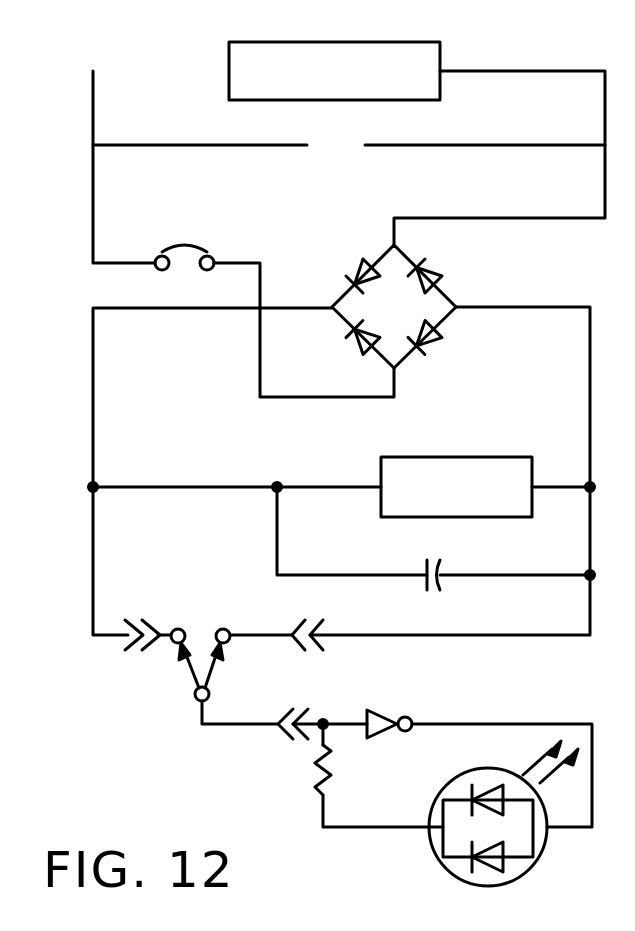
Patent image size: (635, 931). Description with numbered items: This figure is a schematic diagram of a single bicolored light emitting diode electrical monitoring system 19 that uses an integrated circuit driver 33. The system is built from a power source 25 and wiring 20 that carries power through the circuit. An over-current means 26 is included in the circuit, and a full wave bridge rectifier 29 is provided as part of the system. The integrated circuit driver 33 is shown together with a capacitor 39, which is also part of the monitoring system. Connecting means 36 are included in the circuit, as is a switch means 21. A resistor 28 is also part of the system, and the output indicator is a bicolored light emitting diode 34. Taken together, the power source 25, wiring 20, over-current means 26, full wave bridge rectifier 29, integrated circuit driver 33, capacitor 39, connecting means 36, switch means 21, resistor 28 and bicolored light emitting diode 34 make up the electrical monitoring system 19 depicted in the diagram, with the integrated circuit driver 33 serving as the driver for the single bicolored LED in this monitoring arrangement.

The electrical monitoring system 19 is at (495, 70).
The wiring 20 is at (349, 145).
The switch means 21 is at (208, 672).
The power source 25 is at (260, 53).
The over-current means 26 is at (182, 243).
The resistor 28 is at (330, 765).
The full wave bridge rectifier 29 is at (432, 265).
The integrated circuit driver 33 is at (421, 457).
The bicolored light emitting diode 34 is at (545, 850).
The connecting means 36 is at (145, 618).
The capacitor 39 is at (433, 560).